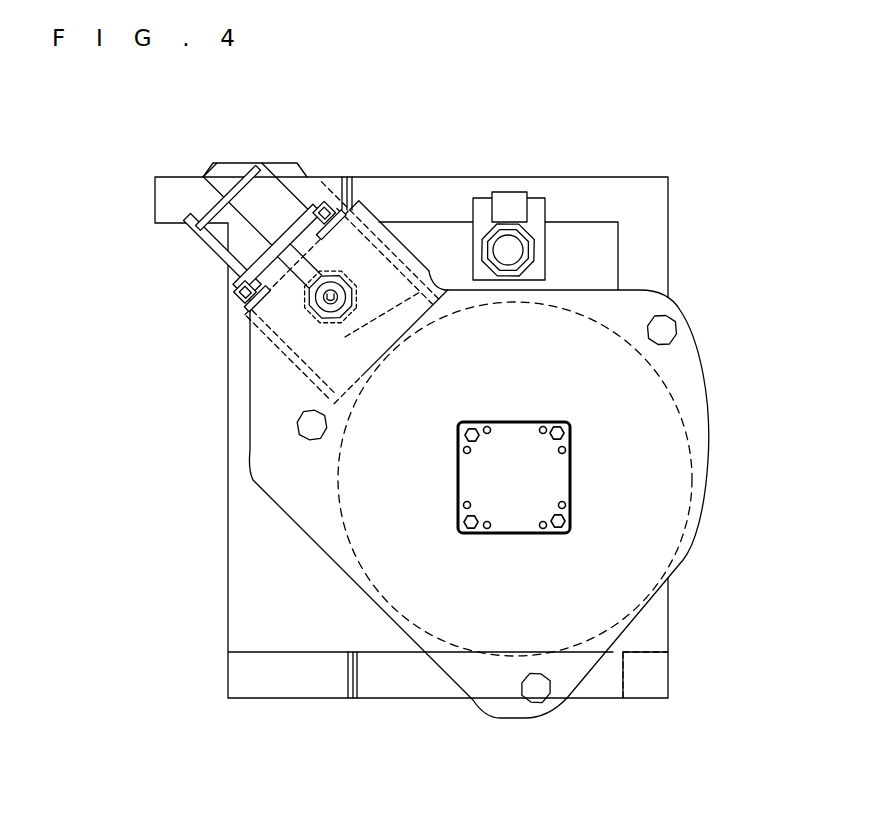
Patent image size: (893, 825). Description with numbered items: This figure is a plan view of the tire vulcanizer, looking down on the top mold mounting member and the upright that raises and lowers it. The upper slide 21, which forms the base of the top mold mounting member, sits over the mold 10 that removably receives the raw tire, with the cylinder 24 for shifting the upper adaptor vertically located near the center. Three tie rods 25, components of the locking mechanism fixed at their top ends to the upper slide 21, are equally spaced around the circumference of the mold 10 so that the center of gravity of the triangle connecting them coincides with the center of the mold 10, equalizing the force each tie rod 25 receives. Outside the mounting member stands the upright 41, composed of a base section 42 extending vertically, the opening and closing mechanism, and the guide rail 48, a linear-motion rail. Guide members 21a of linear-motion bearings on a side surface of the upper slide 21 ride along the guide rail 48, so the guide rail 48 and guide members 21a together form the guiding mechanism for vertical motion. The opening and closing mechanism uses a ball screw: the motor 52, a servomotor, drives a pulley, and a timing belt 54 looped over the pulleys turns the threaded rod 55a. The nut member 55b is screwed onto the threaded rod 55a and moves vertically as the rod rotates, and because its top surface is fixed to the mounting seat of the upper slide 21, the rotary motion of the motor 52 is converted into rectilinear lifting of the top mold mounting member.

The mold 10 is at (705, 462).
The upper slide 21 is at (685, 378).
The guide members 21a is at (326, 205).
The cylinder 24 is at (570, 477).
The tie rods 25 is at (670, 330).
The upright 41 is at (242, 174).
The base section 42 is at (185, 222).
The guide rail 48 is at (313, 203).
The motor 52 is at (540, 245).
The timing belt 54 is at (355, 262).
The threaded rod 55a is at (332, 297).
The nut member 55b is at (240, 180).